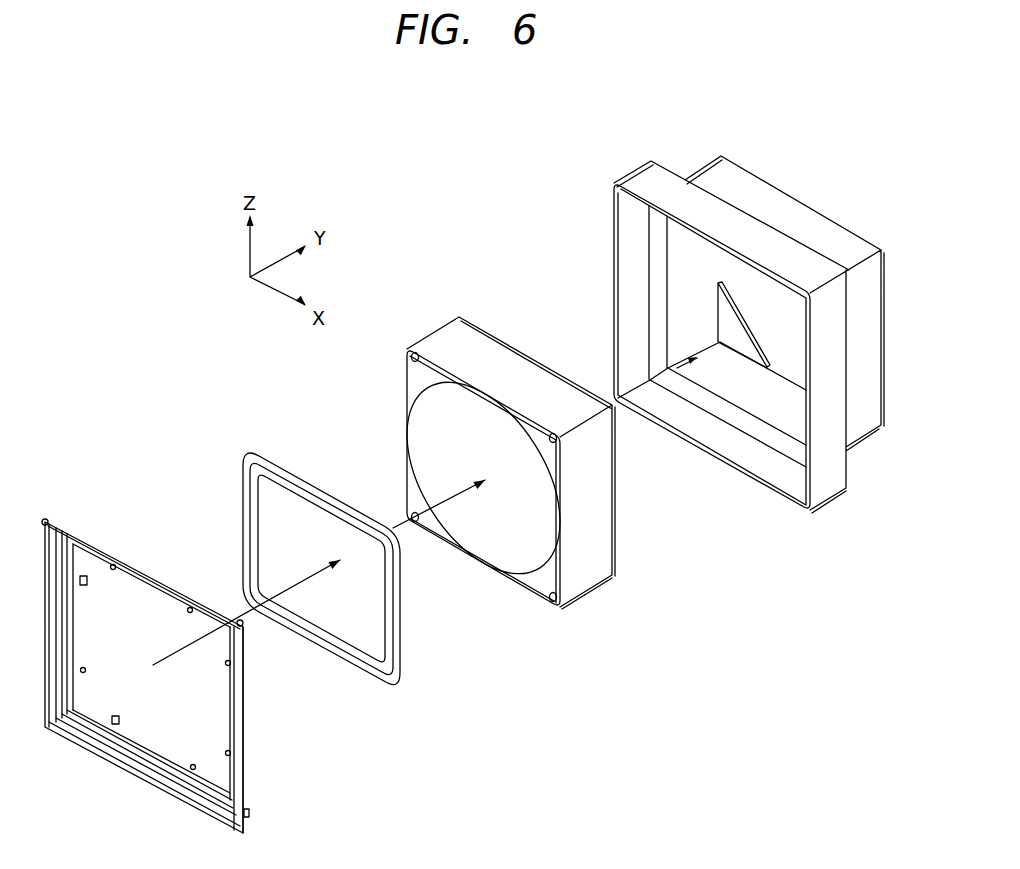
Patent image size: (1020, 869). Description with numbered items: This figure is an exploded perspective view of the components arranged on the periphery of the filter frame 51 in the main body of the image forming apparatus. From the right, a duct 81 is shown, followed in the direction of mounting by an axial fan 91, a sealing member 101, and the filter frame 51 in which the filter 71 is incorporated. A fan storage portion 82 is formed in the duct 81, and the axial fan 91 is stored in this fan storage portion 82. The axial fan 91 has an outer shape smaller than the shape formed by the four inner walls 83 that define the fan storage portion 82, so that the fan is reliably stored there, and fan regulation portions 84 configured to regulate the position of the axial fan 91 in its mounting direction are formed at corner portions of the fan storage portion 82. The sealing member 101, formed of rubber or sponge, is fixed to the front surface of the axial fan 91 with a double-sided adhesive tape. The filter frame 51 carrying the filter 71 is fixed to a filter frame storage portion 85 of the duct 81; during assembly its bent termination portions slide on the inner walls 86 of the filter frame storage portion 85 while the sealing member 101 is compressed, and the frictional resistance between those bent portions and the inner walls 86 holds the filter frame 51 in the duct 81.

The filter frame 51 is at (112, 538).
The filter 71 is at (220, 737).
The duct 81 is at (684, 148).
The fan storage portion 82 is at (763, 400).
The inner walls 83 is at (680, 243).
The fan regulation portions 84 is at (730, 325).
The filter frame storage portion 85 is at (636, 328).
The inner walls of the filter frame storage portion 86 is at (632, 271).
The axial fan 91 is at (497, 325).
The sealing member 101 is at (298, 475).